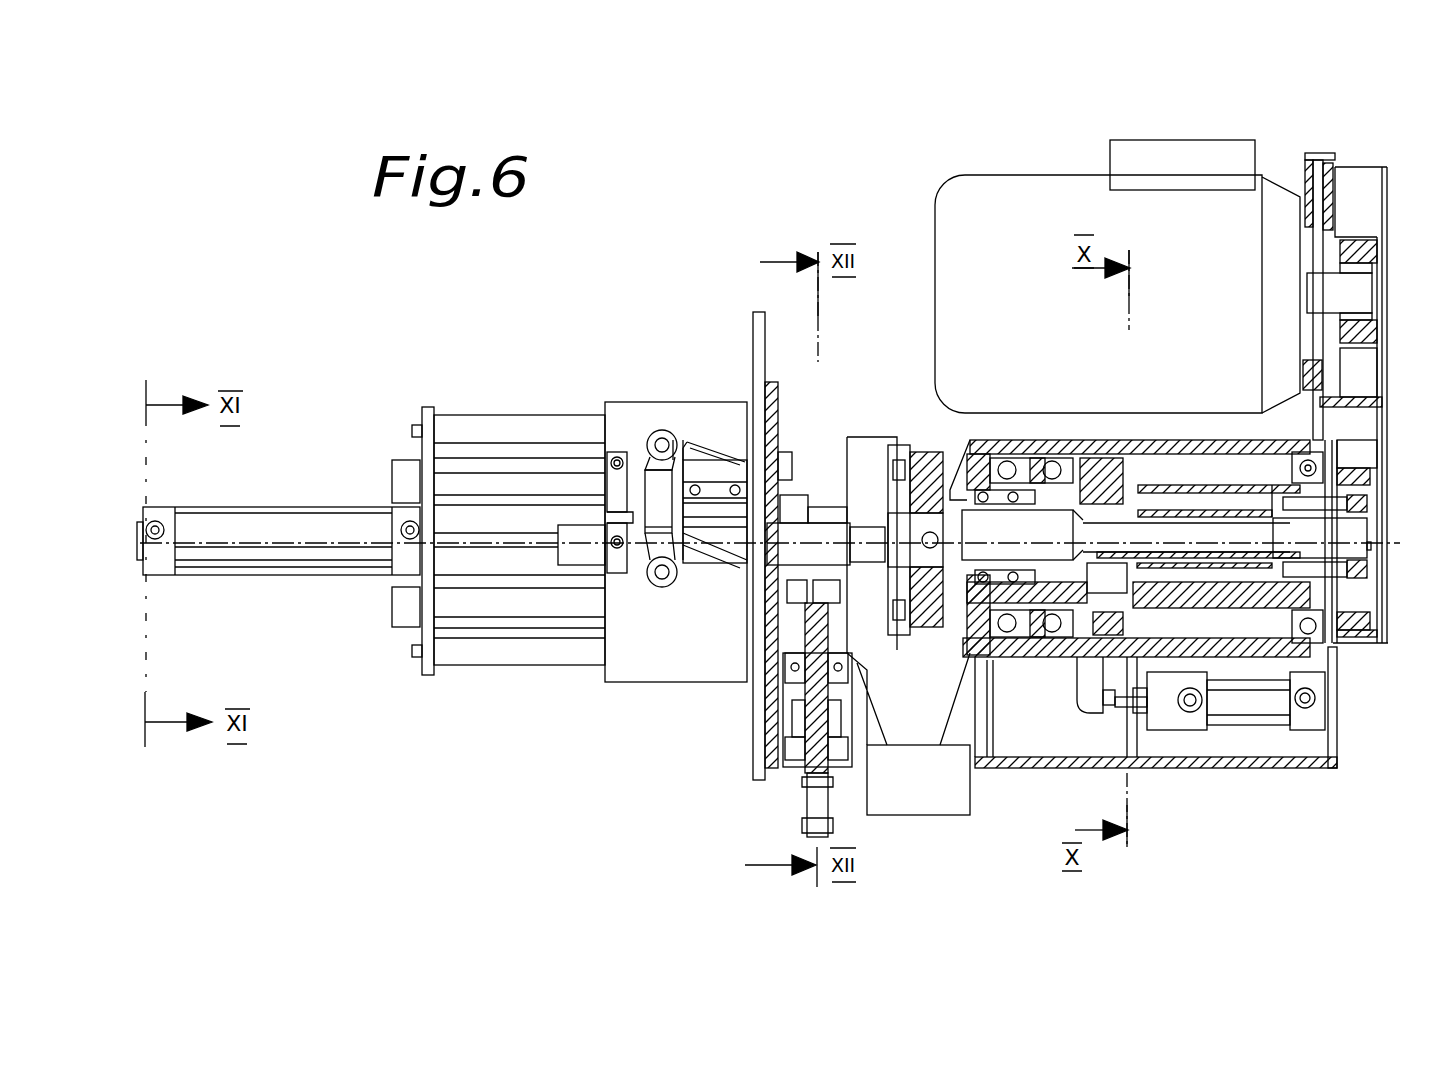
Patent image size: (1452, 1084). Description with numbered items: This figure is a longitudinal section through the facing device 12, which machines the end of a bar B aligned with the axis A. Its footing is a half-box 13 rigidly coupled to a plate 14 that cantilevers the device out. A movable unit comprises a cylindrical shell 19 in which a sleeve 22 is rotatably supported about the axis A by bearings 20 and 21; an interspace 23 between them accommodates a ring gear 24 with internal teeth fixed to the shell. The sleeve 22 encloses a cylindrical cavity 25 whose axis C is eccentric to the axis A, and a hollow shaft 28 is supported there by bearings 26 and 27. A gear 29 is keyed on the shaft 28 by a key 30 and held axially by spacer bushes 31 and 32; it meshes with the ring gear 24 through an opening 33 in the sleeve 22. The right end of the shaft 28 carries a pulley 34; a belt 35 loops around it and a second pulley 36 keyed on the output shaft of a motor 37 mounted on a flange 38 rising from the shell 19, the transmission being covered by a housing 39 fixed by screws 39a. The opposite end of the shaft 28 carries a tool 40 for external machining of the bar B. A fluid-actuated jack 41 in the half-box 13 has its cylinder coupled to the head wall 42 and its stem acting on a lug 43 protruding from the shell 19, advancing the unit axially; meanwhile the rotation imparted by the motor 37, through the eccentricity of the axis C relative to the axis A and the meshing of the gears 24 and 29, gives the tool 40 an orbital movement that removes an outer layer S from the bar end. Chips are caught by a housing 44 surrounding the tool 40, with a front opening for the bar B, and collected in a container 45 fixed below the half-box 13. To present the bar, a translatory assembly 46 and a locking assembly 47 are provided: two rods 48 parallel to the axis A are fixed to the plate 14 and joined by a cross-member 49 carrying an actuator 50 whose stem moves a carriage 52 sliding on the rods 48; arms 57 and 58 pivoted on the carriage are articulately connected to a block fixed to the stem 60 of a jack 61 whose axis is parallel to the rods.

The device 12 is at (686, 283).
The half-box 13 is at (1330, 784).
The plate 14 is at (770, 767).
The cylindrical shell 19 is at (1252, 640).
The bearing 20 is at (1340, 455).
The bearing 21 is at (1000, 445).
The sleeve 22 is at (1237, 497).
The interspace 23 is at (1199, 467).
The ring gear 24 is at (1100, 655).
The cylindrical cavity 25 is at (1265, 500).
The bearing 26 is at (960, 612).
The bearing 27 is at (1316, 474).
The hollow shaft 28 is at (1203, 533).
The gear 29 is at (1040, 490).
The key 30 is at (1060, 525).
The spacer bush 31 is at (1020, 460).
The spacer bush 32 is at (1165, 495).
The opening 33 is at (1153, 443).
The pulley 34 is at (1352, 640).
The belt 35 is at (1355, 373).
The second pulley 36 is at (1365, 240).
The motor 37 is at (936, 180).
The flange 38 is at (1315, 153).
The housing 39 is at (1355, 167).
The screws 39a is at (1337, 400).
The tool 40 is at (927, 438).
The fluid-actuated jack 41 is at (1272, 742).
The head wall 42 is at (1332, 746).
The lug 43 is at (1103, 717).
The housing 44 is at (878, 437).
The container 45 is at (903, 802).
The translatory assembly 46 is at (557, 353).
The locking assembly 47 is at (803, 458).
The rods 48 is at (458, 417).
The cross-member 49 is at (430, 452).
The actuator 50 is at (227, 532).
The carriage 52 is at (643, 653).
The arm 57 is at (664, 520).
The arm 58 is at (662, 590).
The stem 60 is at (633, 503).
The jack 61 is at (728, 468).
The outer layer S is at (855, 435).
The bar B is at (823, 533).
The axis C is at (1397, 571).
The axis A is at (1402, 593).